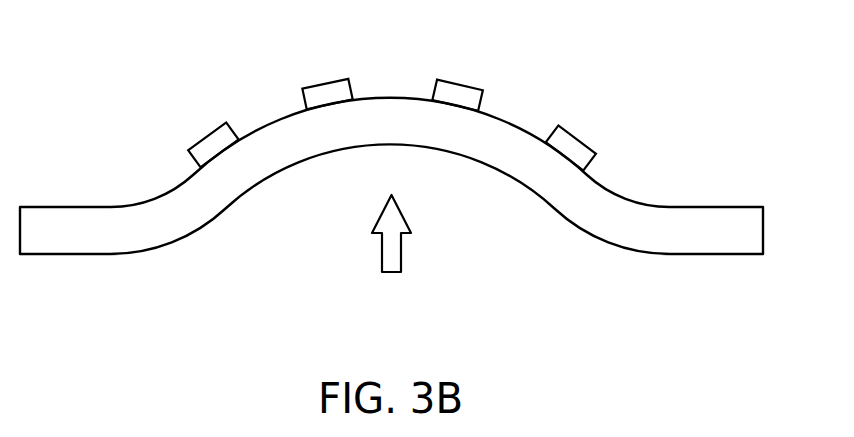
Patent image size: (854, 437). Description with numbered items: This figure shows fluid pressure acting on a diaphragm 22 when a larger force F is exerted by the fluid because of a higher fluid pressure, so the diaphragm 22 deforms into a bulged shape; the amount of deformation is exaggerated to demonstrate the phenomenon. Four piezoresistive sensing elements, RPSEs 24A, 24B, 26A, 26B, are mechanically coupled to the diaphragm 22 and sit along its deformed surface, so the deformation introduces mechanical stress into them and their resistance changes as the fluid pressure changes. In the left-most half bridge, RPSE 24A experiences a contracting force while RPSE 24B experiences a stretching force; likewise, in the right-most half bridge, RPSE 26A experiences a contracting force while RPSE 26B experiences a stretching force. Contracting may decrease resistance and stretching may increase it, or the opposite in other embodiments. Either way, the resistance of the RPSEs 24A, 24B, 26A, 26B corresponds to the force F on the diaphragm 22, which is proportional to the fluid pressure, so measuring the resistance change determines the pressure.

The diaphragm 22 is at (767, 232).
The RPSE 24A is at (210, 135).
The RPSE 24B is at (323, 82).
The RPSE 26A is at (578, 140).
The RPSE 26B is at (463, 83).
The force F is at (401, 248).